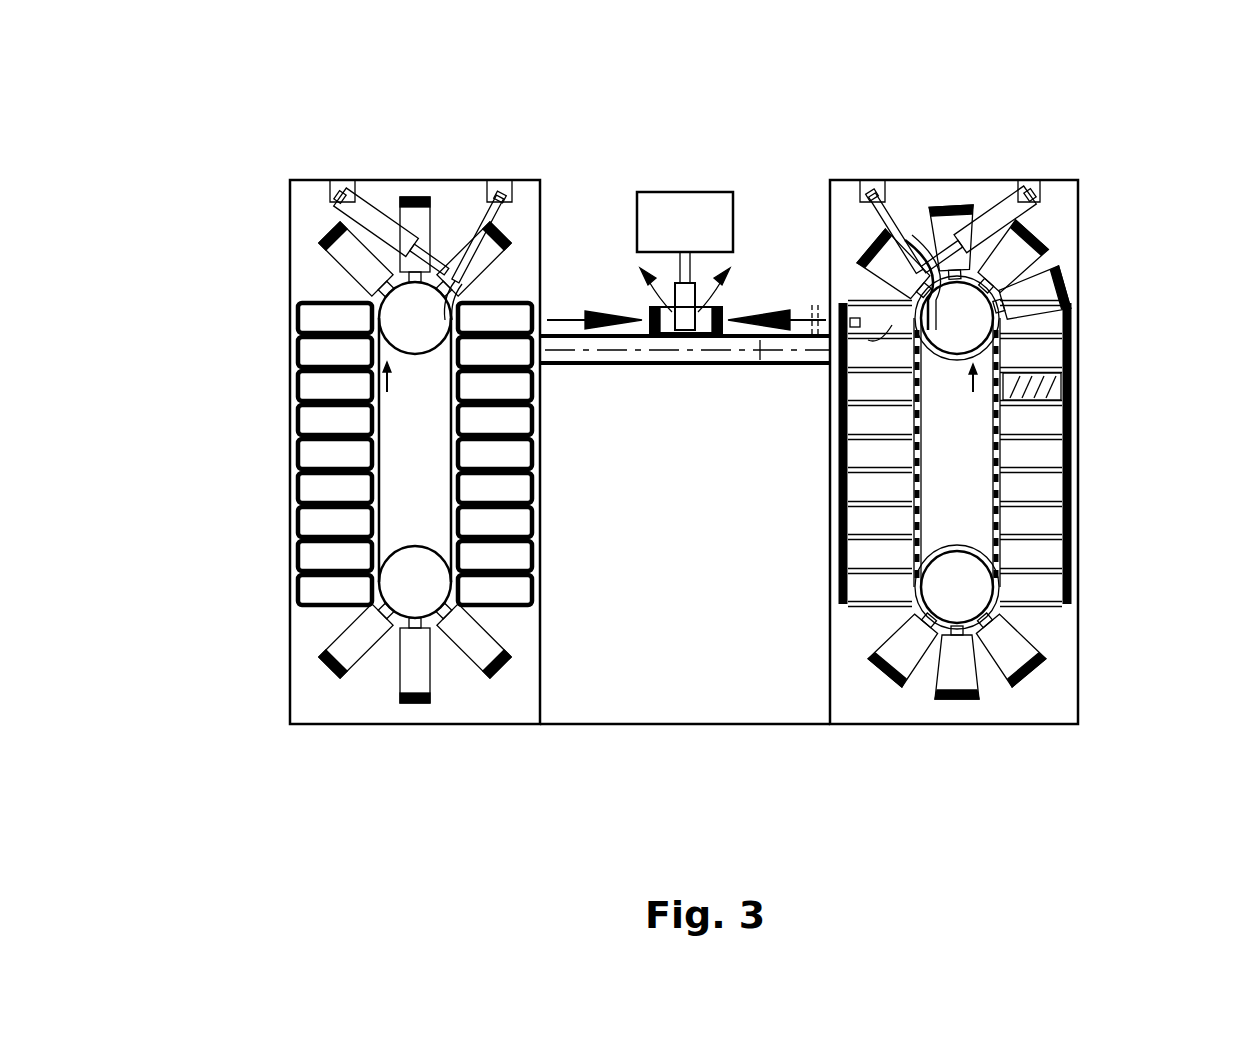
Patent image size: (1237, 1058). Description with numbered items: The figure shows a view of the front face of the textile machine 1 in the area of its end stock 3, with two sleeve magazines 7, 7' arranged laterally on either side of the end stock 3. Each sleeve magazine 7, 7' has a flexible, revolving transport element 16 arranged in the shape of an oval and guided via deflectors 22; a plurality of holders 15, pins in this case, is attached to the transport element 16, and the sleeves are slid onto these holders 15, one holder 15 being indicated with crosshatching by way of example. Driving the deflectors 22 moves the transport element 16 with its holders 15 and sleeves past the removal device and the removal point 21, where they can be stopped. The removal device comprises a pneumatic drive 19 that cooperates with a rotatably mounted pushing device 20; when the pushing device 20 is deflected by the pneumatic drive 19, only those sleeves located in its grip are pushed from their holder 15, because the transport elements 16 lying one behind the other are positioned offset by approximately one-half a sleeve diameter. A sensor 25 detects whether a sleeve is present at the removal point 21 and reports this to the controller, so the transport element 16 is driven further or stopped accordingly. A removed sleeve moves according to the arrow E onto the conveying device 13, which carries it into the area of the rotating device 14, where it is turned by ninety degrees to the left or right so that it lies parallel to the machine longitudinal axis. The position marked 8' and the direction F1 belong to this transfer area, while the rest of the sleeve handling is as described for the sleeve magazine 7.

The textile machine 1 is at (570, 138).
The end stock 3 is at (672, 665).
The sleeve magazine 7 is at (945, 464).
The sleeve magazine 7' is at (356, 402).
The container position 8' is at (781, 241).
The conveying device 13 is at (585, 352).
The rotating device 14 is at (672, 180).
The holder 15 is at (1035, 380).
The transport element 16 is at (1015, 528).
The pneumatic drive 19 is at (1000, 205).
The pushing device 20 is at (930, 312).
The removal point 21 is at (820, 280).
The deflector 22 is at (957, 360).
The sensor 25 is at (832, 380).
The arrow E is at (750, 365).
The transfer direction F1 is at (655, 335).